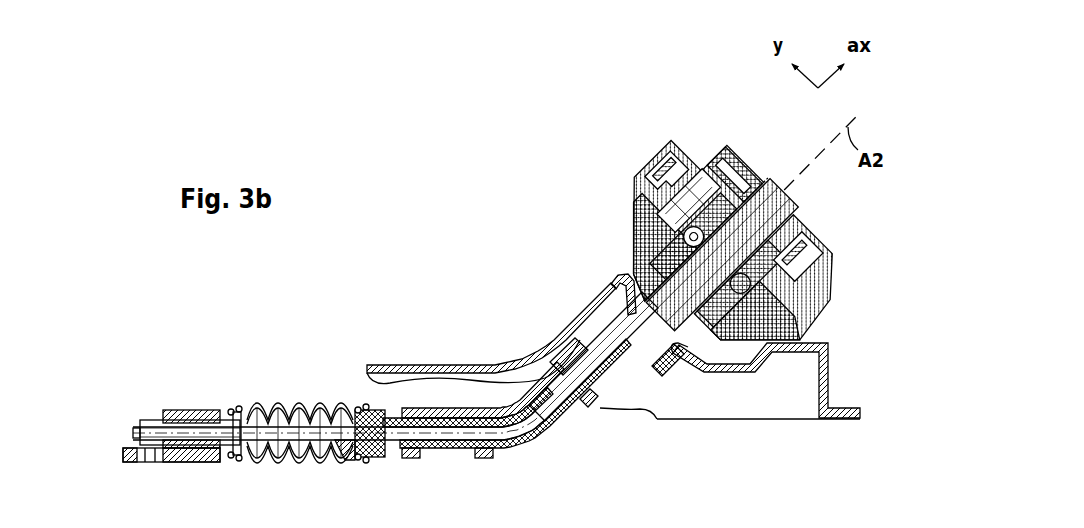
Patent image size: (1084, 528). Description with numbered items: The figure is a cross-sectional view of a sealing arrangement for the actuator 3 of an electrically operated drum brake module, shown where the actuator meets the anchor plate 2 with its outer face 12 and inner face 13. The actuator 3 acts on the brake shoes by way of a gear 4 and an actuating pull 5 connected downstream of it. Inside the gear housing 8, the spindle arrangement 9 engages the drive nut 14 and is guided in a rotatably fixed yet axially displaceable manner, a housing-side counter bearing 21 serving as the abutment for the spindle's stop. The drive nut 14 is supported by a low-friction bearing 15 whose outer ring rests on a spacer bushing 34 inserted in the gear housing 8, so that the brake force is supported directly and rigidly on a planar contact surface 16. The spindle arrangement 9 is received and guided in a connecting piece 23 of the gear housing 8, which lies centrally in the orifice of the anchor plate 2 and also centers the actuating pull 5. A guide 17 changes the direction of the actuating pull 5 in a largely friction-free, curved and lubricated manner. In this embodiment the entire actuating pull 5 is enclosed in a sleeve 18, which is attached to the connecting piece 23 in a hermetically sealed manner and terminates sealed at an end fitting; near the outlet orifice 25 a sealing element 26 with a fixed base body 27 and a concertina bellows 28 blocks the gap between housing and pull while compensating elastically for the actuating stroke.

The anchor plate 2 is at (838, 378).
The actuator 3 is at (649, 152).
The gear 4 is at (819, 306).
The actuating pull 5 is at (596, 355).
The gear housing 8 is at (632, 177).
The spindle arrangement 9 is at (760, 199).
The outer face 12 is at (407, 364).
The inner face 13 is at (798, 360).
The drive nut 14 is at (722, 152).
The bearing 15 is at (670, 234).
The contact surface 16 is at (727, 360).
The guide 17 is at (472, 408).
The sleeve 18 is at (599, 418).
The counter bearing 21 is at (749, 177).
The connecting piece 23 is at (748, 300).
The outlet orifice 25 is at (346, 457).
The sealing element 26 is at (283, 398).
The base body 27 is at (237, 410).
The concertina bellows 28 is at (308, 404).
The spacer bushing 34 is at (677, 346).